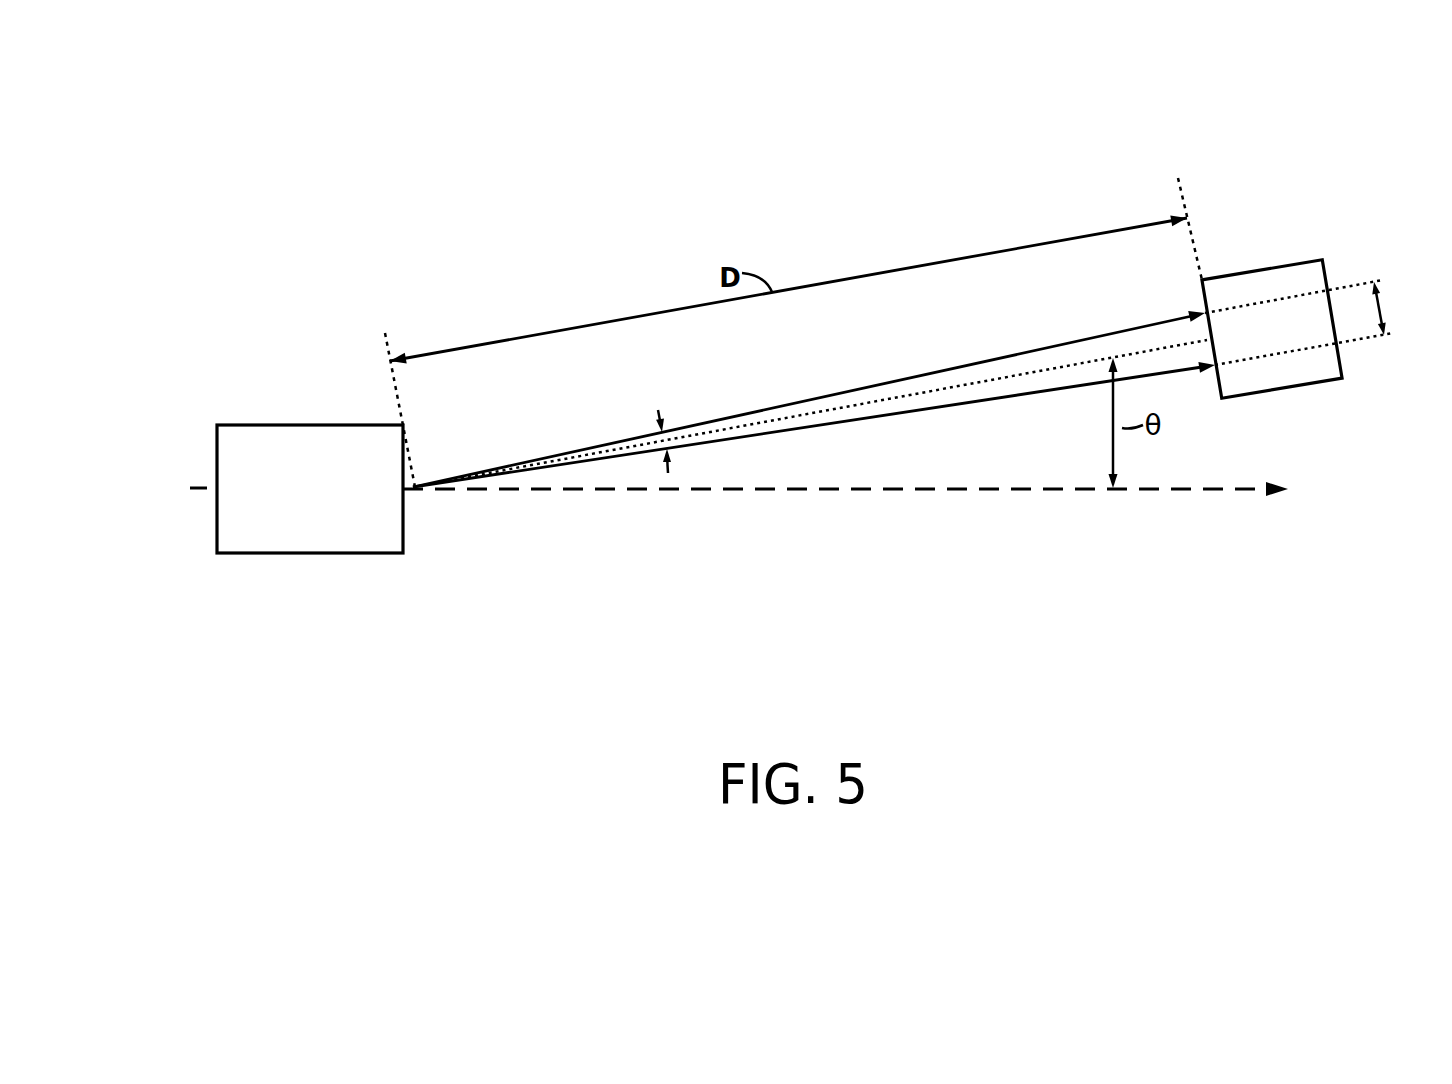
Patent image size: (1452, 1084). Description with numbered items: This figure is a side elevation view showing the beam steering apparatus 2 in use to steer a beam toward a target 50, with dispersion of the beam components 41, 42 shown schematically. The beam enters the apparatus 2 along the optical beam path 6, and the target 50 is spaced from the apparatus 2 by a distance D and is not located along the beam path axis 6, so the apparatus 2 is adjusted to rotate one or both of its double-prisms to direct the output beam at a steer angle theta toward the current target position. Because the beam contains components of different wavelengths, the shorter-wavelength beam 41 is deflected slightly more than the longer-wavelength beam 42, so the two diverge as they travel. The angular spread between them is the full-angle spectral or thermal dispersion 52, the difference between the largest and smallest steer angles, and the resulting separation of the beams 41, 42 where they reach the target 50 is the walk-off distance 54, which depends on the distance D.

The beam steering apparatus 2 is at (311, 425).
The optical beam path 6 is at (170, 488).
The beam component of shorter wavelength 41 is at (1017, 353).
The beam component of longer wavelength 42 is at (992, 400).
The target 50 is at (1287, 388).
The full-angle spectral or thermal dispersion 52 is at (657, 410).
The walk-off distance 54 is at (1383, 307).